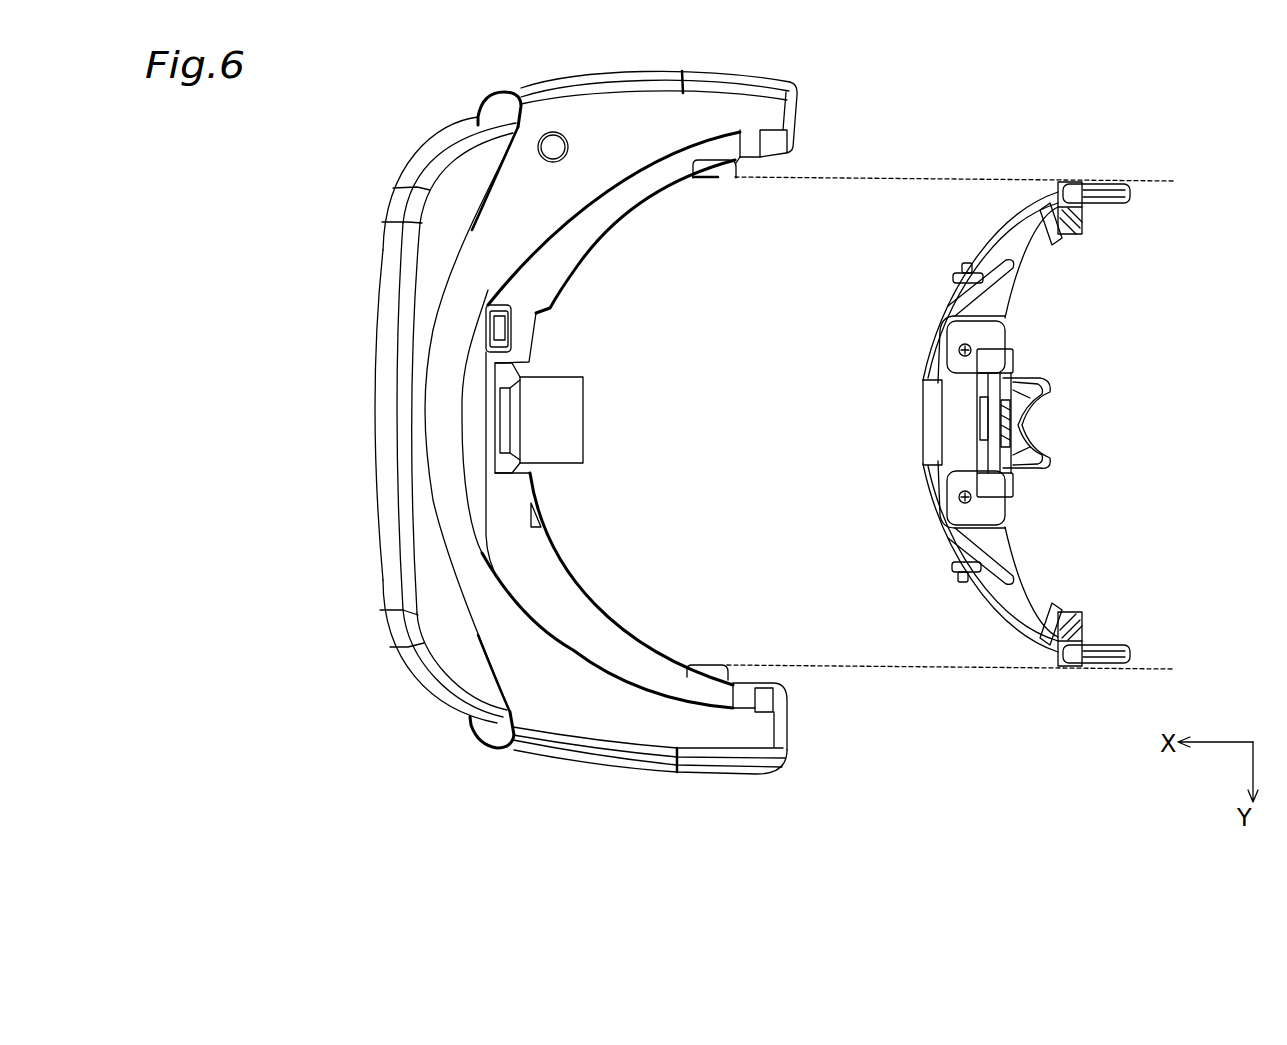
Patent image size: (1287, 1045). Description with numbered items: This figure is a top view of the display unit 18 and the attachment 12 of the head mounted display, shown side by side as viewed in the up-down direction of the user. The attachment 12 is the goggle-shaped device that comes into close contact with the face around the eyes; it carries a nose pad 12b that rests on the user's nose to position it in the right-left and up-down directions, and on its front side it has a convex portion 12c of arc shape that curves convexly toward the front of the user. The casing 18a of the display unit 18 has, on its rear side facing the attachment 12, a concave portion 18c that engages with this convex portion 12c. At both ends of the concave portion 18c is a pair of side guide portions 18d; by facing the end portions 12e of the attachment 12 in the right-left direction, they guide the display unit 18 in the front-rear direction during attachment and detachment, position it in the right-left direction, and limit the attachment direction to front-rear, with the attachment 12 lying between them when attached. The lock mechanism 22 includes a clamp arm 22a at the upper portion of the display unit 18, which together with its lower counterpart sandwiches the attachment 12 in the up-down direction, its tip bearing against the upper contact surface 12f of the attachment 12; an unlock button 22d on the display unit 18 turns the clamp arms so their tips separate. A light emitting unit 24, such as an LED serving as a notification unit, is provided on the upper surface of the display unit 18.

The attachment 12 is at (1000, 250).
The nose pad 12b is at (1045, 470).
The convex portion 12c is at (937, 535).
The end portions 12e is at (1070, 180).
The upper contact surface 12f is at (967, 417).
The display unit 18 is at (376, 387).
The casing 18a is at (583, 593).
The concave portion 18c is at (593, 245).
The side guide portions 18d is at (710, 181).
The lock mechanism 22 is at (584, 424).
The clamp arm 22a is at (566, 427).
The unlock button 22d is at (510, 327).
The light emitting unit 24 is at (573, 139).